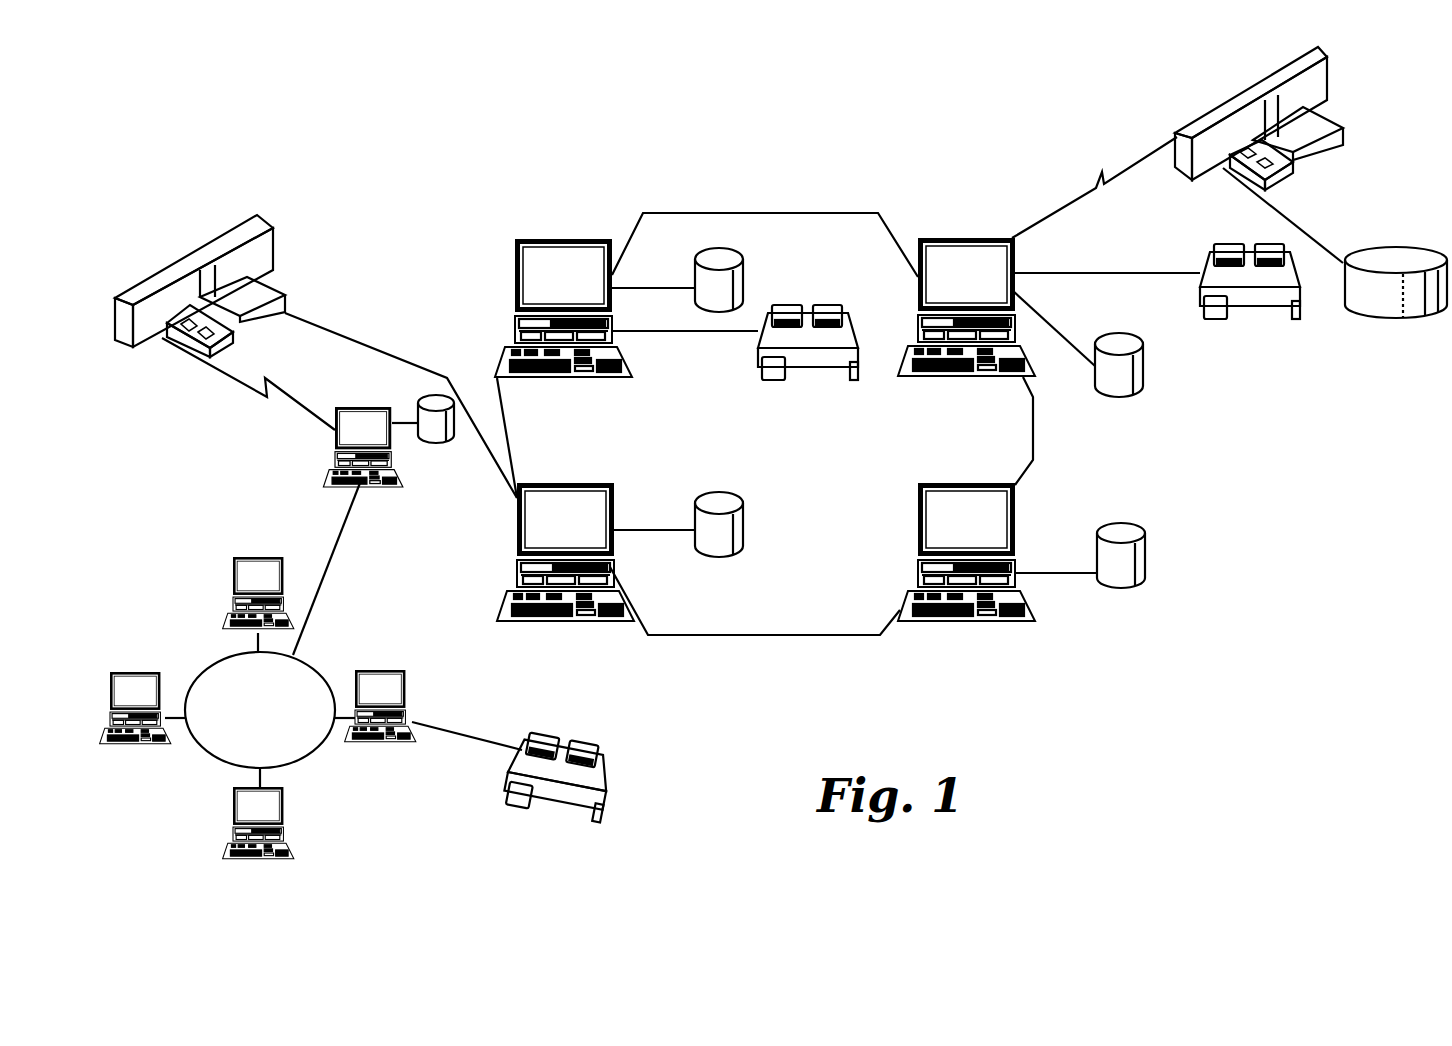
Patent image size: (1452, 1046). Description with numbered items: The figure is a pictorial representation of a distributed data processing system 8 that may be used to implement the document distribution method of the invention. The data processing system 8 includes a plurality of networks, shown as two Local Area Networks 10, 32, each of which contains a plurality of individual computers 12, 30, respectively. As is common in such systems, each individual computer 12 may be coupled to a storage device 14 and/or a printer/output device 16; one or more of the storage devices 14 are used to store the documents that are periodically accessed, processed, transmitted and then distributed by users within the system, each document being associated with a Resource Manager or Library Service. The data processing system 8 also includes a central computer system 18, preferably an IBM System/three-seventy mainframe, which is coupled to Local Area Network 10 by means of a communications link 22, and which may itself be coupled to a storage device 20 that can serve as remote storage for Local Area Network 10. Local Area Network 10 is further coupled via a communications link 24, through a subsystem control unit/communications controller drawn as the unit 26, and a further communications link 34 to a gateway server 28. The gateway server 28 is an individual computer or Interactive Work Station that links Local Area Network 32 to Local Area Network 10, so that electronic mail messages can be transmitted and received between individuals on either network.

The data processing system 8 is at (794, 178).
The Local Area Network 10 is at (793, 637).
The individual computer 12 is at (583, 238).
The storage device 14 is at (745, 263).
The printer/output device 16 is at (802, 306).
The central computer system 18 is at (1255, 88).
The storage device 20 is at (1420, 248).
The communications link 22 is at (1135, 162).
The communications link 24 is at (368, 348).
The mainframe computer 26 is at (270, 223).
The gateway server 28 is at (362, 407).
The individual computer 30 is at (272, 552).
The Local Area Network 32 is at (212, 757).
The communications link 34 is at (287, 403).